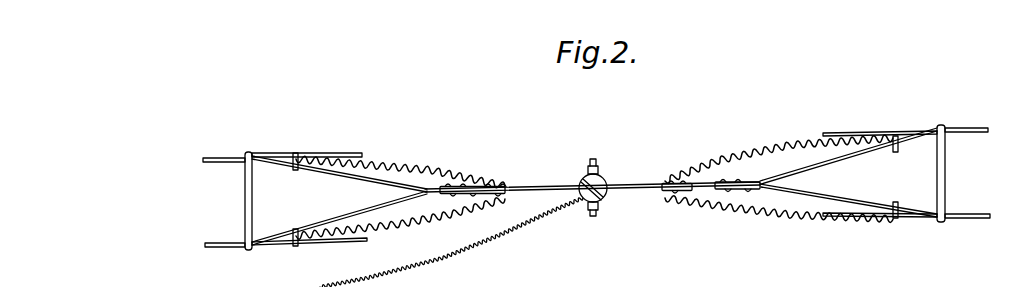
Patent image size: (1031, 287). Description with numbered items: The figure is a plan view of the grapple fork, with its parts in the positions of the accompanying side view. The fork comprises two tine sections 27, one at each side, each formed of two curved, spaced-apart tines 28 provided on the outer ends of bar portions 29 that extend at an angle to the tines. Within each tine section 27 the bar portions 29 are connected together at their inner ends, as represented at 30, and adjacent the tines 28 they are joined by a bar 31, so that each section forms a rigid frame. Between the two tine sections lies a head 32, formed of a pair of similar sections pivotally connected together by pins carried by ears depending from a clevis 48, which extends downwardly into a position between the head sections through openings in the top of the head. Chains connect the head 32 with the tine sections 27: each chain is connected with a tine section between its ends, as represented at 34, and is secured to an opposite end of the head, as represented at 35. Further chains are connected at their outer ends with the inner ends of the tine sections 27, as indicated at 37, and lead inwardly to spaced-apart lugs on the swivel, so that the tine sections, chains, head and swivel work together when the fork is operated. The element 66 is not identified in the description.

The tine section 27 is at (259, 162).
The tine 28 is at (220, 159).
The bar portion 29 is at (330, 224).
The inner end connection of bar portions 30 is at (456, 188).
The bar 31 is at (244, 200).
The head 32 is at (609, 183).
The chain connection to tine section 34 is at (296, 240).
The chain securement to head 35 is at (510, 189).
The chain connection at inner end of tine section 37 is at (812, 215).
The clevis 48 is at (606, 179).
The chain 66 is at (443, 258).